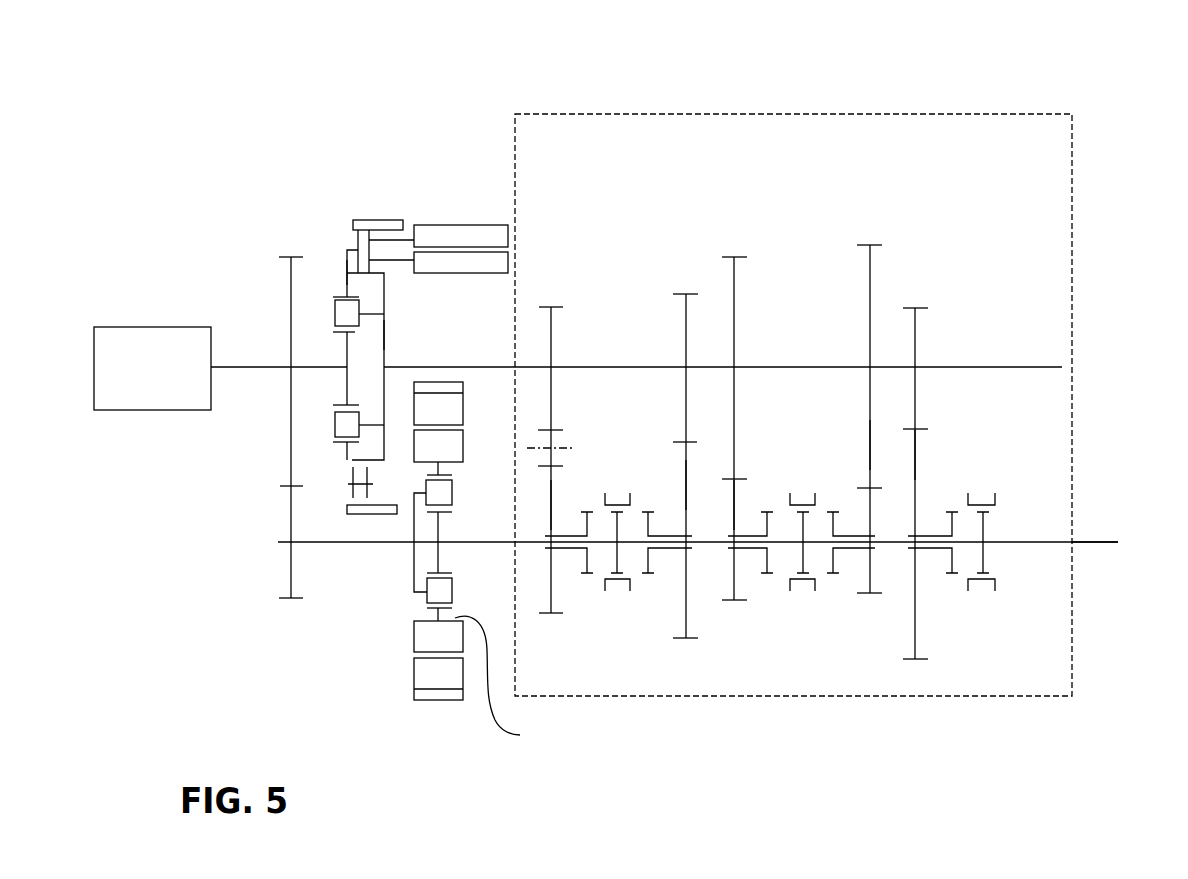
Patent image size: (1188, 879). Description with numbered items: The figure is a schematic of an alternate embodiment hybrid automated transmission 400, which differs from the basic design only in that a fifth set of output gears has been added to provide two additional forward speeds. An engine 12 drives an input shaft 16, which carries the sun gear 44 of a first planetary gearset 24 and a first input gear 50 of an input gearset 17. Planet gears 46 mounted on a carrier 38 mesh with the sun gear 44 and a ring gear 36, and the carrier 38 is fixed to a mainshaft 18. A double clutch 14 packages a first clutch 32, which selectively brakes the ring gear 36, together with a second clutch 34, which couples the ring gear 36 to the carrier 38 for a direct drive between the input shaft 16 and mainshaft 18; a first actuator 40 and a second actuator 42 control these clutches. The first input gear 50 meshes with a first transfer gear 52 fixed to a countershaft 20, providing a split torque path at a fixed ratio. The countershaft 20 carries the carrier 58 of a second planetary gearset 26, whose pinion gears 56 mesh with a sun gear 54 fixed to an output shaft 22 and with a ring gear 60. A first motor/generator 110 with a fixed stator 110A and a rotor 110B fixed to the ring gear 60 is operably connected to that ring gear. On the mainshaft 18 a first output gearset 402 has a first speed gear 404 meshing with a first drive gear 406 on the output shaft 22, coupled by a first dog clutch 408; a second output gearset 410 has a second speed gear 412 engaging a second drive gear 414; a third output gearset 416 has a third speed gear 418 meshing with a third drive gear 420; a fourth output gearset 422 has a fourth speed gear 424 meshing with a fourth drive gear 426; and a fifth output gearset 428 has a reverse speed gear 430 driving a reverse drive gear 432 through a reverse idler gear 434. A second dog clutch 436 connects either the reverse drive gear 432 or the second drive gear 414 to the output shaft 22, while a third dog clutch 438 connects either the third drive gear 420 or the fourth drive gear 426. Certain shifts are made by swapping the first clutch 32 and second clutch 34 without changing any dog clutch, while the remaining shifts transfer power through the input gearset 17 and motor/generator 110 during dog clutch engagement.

The engine 12 is at (130, 332).
The double clutch 14 is at (375, 217).
The input shaft 16 is at (237, 367).
The input gearset 17 is at (273, 282).
The mainshaft 18 is at (468, 367).
The countershaft 20 is at (318, 542).
The output shaft 22 is at (1092, 540).
The first planetary gearset 24 is at (338, 258).
The second planetary gearset 26 is at (407, 592).
The first clutch 32 is at (357, 243).
The second clutch 34 is at (377, 267).
The ring gear 36 is at (347, 270).
The carrier 38 is at (384, 333).
The first actuator 40 is at (460, 225).
The second actuator 42 is at (478, 275).
The sun gear 44 is at (343, 337).
The planet gears 46 is at (343, 312).
The first input gear 50 is at (291, 418).
The first transfer gear 52 is at (291, 566).
The sun gear 54 is at (440, 535).
The pinion gears 56 is at (447, 497).
The carrier 58 is at (413, 525).
The ring gear 60 is at (500, 681).
The first motor/generator 110 is at (397, 694).
The stator 110A is at (425, 695).
The rotor 110B is at (415, 640).
The transmission 400 is at (993, 87).
The first output gearset 402 is at (950, 445).
The first speed gear 404 is at (915, 337).
The first drive gear 406 is at (915, 447).
The first dog clutch 408 is at (1013, 594).
The second output gearset 410 is at (658, 431).
The second speed gear 412 is at (686, 327).
The second drive gear 414 is at (686, 483).
The third output gearset 416 is at (769, 395).
The third speed gear 418 is at (734, 283).
The third drive gear 420 is at (734, 503).
The fourth output gearset 422 is at (842, 417).
The fourth speed gear 424 is at (870, 332).
The fourth drive gear 426 is at (870, 438).
The fifth output gearset 428 is at (842, 419).
The reverse speed gear 430 is at (551, 343).
The reverse drive gear 432 is at (550, 500).
The reverse idler gear 434 is at (558, 440).
The second dog clutch 436 is at (642, 593).
The third dog clutch 438 is at (840, 597).